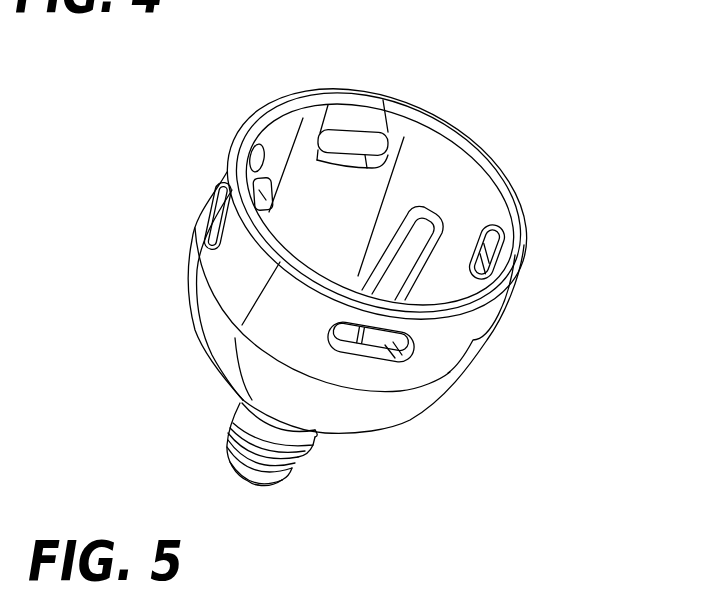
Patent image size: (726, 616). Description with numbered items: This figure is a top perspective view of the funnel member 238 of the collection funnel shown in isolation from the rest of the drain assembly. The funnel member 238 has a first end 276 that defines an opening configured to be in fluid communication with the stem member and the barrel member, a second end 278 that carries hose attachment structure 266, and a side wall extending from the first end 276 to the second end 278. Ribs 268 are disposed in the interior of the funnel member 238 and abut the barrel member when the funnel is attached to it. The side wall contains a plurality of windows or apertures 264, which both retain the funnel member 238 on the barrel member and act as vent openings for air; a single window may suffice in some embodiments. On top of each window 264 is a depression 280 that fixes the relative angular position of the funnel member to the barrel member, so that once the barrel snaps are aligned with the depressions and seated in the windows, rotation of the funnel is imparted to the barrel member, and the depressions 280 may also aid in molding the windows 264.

The funnel member 238 is at (502, 147).
The windows or apertures 264 is at (361, 138).
The hose attachment structure 266 is at (303, 453).
The ribs 268 is at (272, 212).
The first end 276 is at (450, 124).
The second end 278 is at (257, 488).
The depression 280 is at (385, 105).